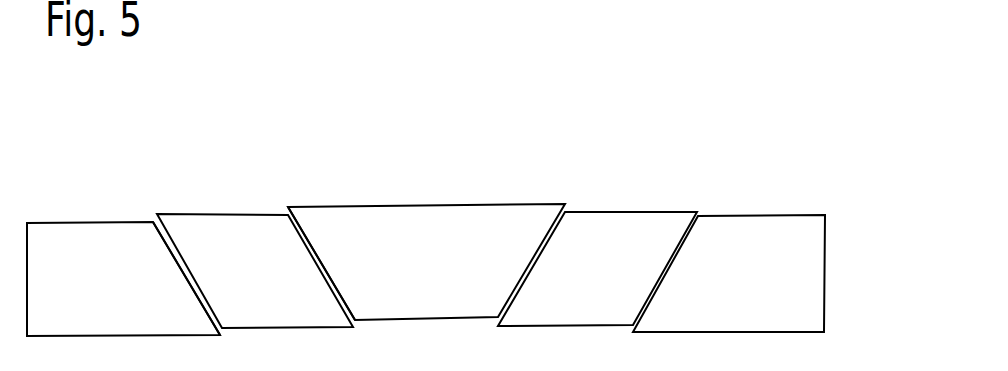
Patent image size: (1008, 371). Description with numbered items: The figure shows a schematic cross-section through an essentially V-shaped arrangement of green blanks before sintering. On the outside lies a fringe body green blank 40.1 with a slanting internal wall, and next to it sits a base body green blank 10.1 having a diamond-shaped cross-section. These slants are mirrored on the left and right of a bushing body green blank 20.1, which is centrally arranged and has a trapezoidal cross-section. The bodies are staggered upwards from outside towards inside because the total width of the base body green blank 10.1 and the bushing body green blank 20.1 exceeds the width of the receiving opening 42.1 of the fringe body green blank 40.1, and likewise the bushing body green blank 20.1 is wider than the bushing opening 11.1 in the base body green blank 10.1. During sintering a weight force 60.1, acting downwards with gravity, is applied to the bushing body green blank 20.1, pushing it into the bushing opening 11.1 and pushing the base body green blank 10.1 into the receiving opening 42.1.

The weight force 60.1 is at (423, 165).
The fringe body green blank 40.1 is at (90, 223).
The receiving opening 42.1 is at (177, 252).
The base body green blank 10.1 is at (250, 213).
The bushing opening 11.1 is at (323, 267).
The bushing body green blank 20.1 is at (503, 203).